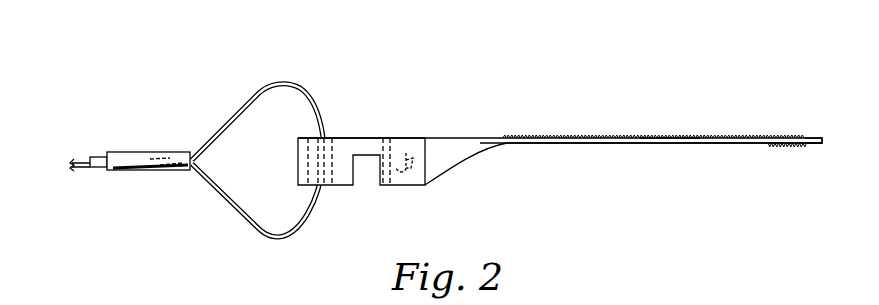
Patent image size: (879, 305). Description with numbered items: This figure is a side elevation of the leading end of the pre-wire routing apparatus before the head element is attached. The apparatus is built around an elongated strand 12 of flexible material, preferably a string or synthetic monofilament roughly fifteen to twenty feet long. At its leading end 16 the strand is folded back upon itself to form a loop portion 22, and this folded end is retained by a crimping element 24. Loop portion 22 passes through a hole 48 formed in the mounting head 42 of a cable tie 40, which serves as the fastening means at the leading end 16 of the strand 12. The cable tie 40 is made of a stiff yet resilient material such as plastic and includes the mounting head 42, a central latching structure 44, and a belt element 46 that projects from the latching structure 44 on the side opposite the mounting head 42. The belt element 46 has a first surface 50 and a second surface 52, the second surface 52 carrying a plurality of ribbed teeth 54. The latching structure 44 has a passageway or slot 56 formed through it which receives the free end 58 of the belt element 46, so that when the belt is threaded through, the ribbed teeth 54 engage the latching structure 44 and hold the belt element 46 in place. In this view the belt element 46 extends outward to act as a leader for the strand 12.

The elongated strand 12 is at (130, 151).
The leading end 16 is at (267, 133).
The loop portion 22 is at (264, 86).
The crimping element 24 is at (173, 172).
The cable tie 40 is at (560, 127).
The mounting head 42 is at (391, 145).
The central latching structure 44 is at (462, 160).
The belt element 46 is at (603, 145).
The hole 48 is at (328, 137).
The first surface 50 is at (700, 145).
The second surface 52 is at (560, 136).
The ribbed teeth 54 is at (657, 135).
The slot 56 is at (396, 133).
The free end 58 is at (821, 137).